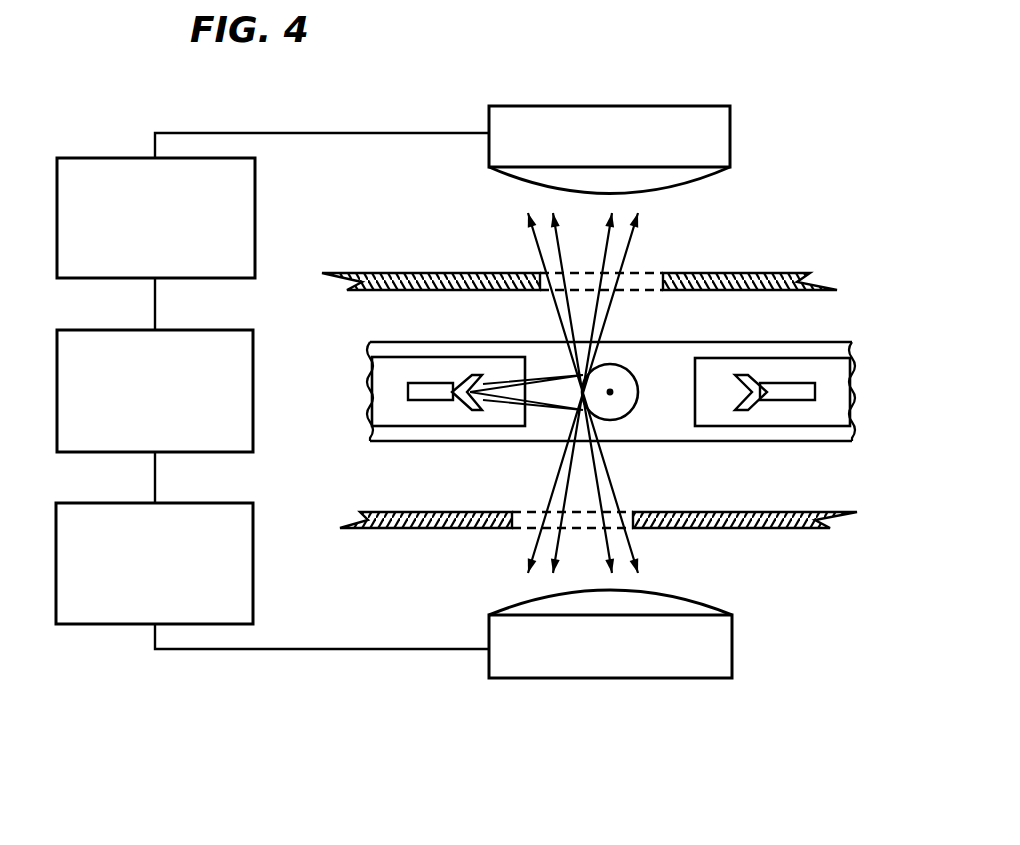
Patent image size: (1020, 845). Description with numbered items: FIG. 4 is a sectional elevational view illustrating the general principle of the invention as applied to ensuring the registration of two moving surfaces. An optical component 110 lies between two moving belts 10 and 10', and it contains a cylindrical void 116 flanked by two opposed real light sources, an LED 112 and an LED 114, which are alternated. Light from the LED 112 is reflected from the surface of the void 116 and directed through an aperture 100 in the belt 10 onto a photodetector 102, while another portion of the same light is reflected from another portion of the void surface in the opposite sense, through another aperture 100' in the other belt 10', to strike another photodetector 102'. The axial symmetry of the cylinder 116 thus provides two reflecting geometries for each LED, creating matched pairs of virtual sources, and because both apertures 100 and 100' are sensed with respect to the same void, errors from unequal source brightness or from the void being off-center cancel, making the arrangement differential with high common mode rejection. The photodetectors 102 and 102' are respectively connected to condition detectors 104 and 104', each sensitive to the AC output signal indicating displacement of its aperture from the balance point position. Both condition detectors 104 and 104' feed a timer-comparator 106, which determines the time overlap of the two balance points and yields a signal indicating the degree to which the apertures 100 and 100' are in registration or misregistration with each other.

The belt 10 is at (579, 261).
The belt 10' is at (597, 541).
The aperture 100 is at (636, 260).
The aperture 100' is at (536, 542).
The photodetector 102 is at (639, 150).
The photodetector 102' is at (643, 634).
The condition detector 104 is at (144, 199).
The condition detector 104' is at (140, 582).
The timer-comparator 106 is at (253, 363).
The optical component 110 is at (415, 342).
The LED 112 is at (413, 420).
The LED 114 is at (807, 418).
The void 116 is at (623, 362).